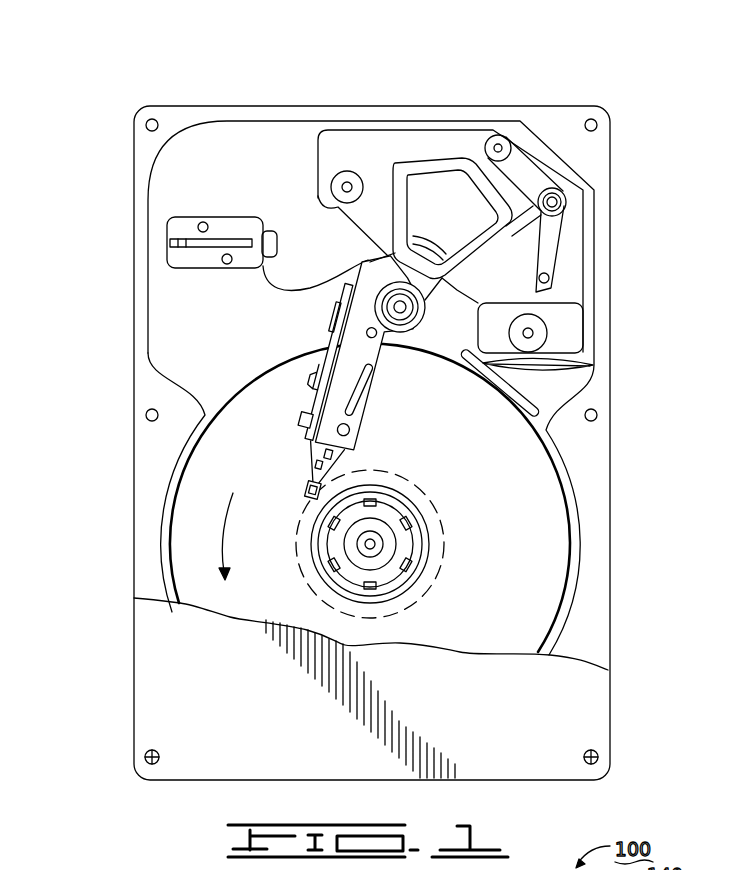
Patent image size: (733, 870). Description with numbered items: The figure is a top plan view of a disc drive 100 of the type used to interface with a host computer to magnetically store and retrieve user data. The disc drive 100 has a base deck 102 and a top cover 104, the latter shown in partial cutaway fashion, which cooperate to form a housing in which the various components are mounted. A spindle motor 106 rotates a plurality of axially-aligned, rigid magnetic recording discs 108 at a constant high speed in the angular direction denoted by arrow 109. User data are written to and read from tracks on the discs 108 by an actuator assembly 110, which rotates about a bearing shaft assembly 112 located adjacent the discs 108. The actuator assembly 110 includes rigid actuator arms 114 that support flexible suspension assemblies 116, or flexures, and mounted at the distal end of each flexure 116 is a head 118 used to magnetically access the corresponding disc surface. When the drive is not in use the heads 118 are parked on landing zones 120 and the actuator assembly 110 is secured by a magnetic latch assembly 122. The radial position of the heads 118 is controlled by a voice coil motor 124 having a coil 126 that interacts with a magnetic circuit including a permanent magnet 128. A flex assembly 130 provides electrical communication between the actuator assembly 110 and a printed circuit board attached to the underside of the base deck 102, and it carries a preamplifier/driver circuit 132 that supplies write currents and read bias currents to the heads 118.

The disc drive 100 is at (143, 88).
The base deck 102 is at (177, 318).
The top cover 104 is at (172, 670).
The spindle motor 106 is at (400, 533).
The magnetic recording discs 108 is at (550, 553).
The arrow 109 is at (225, 530).
The actuator assembly 110 is at (334, 375).
The bearing shaft assembly 112 is at (418, 312).
The actuator arms 114 is at (372, 405).
The flexible suspension assemblies 116 is at (322, 458).
The head 118 is at (315, 487).
The landing zones 120 is at (433, 593).
The magnetic latch assembly 122 is at (555, 240).
The voice coil motor 124 is at (447, 136).
The coil 126 is at (415, 160).
The permanent magnet 128 is at (540, 303).
The flex assembly 130 is at (270, 300).
The preamplifier/driver circuit 132 is at (338, 312).